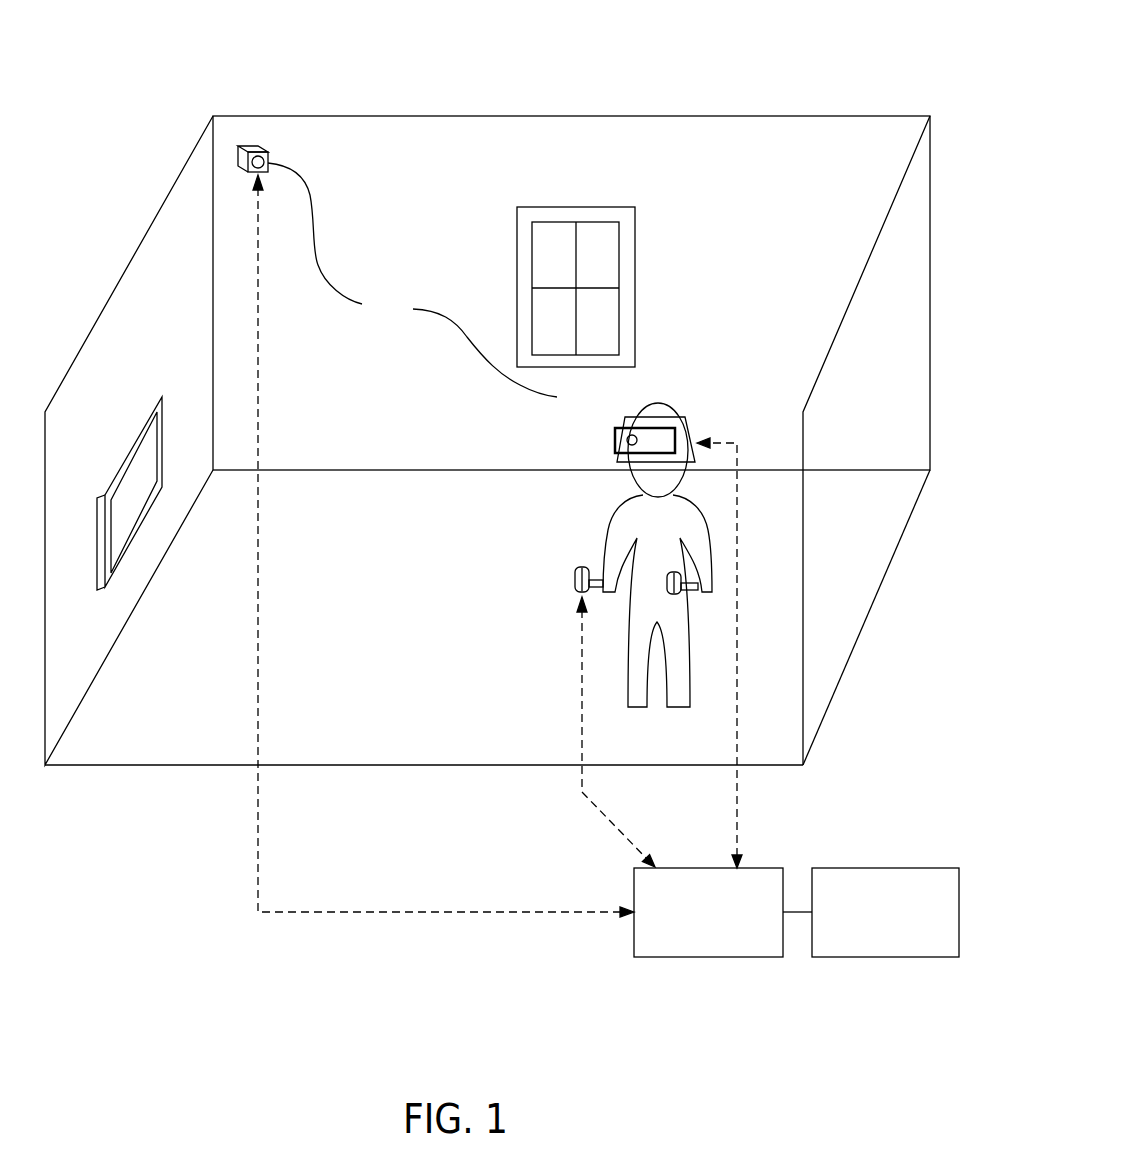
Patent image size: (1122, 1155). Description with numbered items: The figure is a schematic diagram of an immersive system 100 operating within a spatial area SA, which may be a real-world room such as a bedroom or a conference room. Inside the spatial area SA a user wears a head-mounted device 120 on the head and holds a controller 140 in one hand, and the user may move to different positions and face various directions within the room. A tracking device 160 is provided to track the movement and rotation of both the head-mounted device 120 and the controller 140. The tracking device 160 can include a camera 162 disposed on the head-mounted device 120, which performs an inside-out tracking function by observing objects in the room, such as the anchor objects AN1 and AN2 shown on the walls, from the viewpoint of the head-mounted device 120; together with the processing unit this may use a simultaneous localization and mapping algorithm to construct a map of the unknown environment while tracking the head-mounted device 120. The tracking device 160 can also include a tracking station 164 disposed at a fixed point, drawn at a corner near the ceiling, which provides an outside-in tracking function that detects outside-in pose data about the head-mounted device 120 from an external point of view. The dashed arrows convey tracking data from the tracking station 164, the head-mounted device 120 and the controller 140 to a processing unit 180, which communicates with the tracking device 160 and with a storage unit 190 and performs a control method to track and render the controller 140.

The immersive system 100 is at (736, 72).
The head-mounted device 120 is at (617, 459).
The controller 140 is at (575, 578).
The tracking device 160 is at (412, 280).
The camera 162 is at (628, 437).
The tracking station 164 is at (240, 158).
The processing unit 180 is at (723, 958).
The storage unit 190 is at (895, 958).
The spatial area SA is at (140, 247).
The anchor object AN1 is at (635, 232).
The anchor object AN2 is at (137, 428).